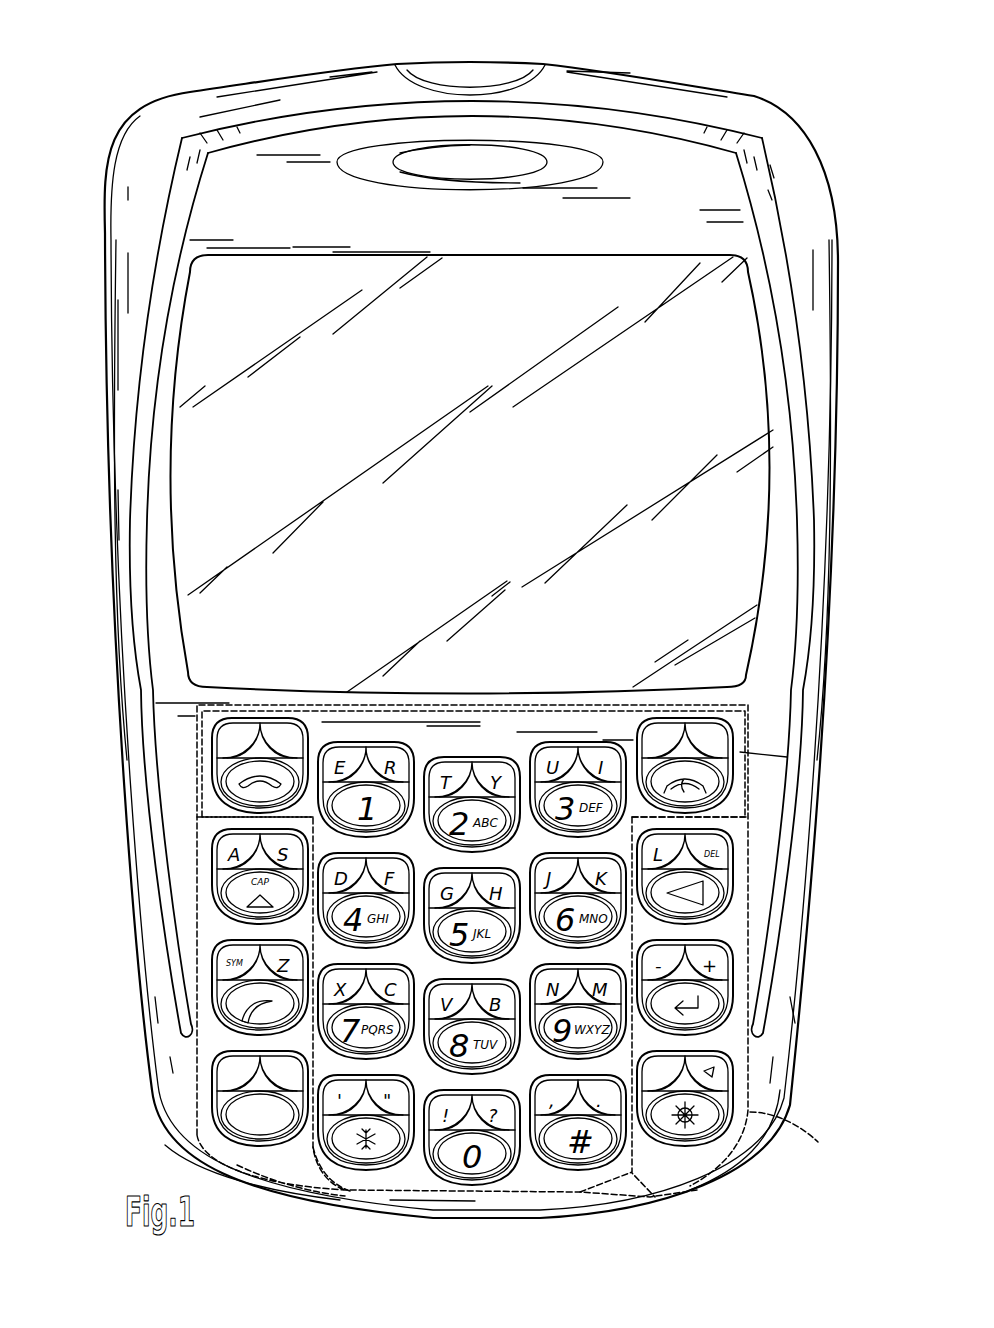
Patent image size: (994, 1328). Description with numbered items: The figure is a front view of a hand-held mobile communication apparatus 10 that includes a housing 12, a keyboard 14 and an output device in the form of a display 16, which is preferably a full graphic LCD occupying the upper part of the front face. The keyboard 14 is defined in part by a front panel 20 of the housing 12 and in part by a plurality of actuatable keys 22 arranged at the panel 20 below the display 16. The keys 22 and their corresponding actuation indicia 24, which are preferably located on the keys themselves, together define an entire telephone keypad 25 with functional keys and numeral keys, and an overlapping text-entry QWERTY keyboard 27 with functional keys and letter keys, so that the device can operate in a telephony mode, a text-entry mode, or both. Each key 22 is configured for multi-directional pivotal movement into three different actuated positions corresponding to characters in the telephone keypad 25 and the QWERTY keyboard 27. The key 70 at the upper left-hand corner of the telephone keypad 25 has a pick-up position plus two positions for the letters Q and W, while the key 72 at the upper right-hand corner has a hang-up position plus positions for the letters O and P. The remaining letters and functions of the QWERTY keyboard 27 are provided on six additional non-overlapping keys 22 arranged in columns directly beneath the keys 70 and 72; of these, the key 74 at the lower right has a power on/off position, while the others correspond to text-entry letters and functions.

The apparatus 10 is at (265, 37).
The housing 12 is at (118, 667).
The keyboard 14 is at (182, 754).
The display 16 is at (207, 352).
The front panel 20 is at (177, 792).
The actuatable keys 22 is at (192, 880).
The actuation indicia 24 is at (215, 1130).
The telephone keypad 25 is at (658, 1193).
The text-entry keyboard 27 is at (790, 1139).
The key 70 is at (252, 740).
The key 72 is at (688, 740).
The key 74 is at (690, 1142).